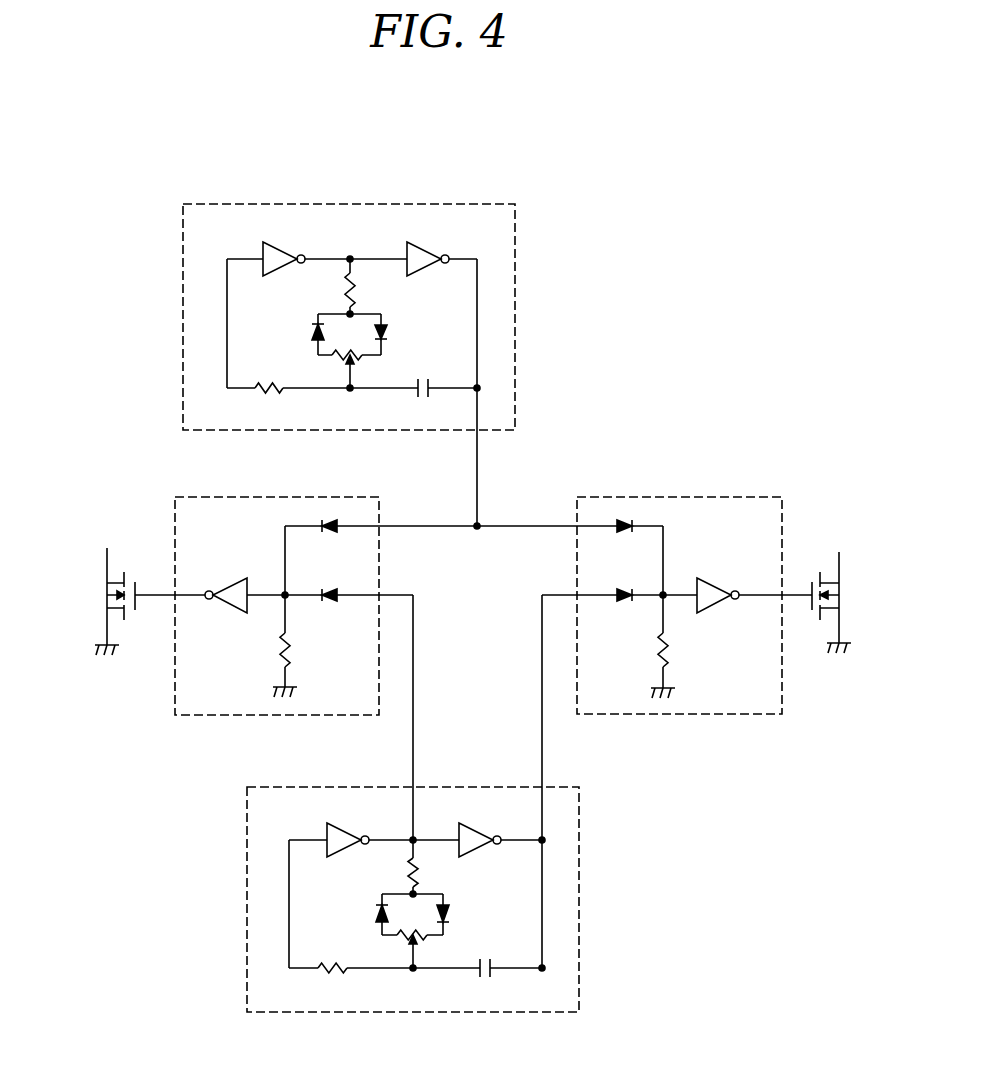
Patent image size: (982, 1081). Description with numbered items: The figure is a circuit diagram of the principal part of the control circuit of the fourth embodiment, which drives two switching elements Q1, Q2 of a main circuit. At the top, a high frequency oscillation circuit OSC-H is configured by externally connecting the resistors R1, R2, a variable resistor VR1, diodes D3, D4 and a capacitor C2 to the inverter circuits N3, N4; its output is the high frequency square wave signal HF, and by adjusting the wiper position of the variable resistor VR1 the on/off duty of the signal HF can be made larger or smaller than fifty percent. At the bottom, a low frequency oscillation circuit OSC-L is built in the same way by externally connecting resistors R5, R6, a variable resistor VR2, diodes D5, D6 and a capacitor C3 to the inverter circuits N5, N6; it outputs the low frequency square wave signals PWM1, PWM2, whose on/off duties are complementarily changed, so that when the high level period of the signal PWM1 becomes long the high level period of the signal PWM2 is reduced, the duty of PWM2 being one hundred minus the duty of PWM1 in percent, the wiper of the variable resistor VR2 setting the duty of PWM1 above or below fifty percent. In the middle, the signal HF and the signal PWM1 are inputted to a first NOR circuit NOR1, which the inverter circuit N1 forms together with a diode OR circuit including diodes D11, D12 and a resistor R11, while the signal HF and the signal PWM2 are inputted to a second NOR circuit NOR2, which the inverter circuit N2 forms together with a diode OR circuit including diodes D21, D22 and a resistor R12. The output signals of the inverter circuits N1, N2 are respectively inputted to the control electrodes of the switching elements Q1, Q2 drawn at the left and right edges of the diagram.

The high frequency oscillation circuit OSC-H is at (349, 303).
The low frequency oscillation circuit OSC-L is at (413, 917).
The first NOR circuit NOR1 is at (277, 590).
The second NOR circuit NOR2 is at (679, 590).
The high frequency square wave signal HF is at (477, 511).
The low frequency square wave signal PWM1 is at (377, 717).
The low frequency square wave signal PWM2 is at (582, 717).
The inverter circuit N1 is at (226, 583).
The inverter circuit N2 is at (718, 584).
The inverter circuit N3 is at (284, 249).
The inverter circuit N4 is at (428, 249).
The inverter circuit N5 is at (348, 830).
The inverter circuit N6 is at (480, 830).
The resistor R1 is at (271, 403).
The resistor R2 is at (332, 290).
The resistor R5 is at (396, 871).
The resistor R6 is at (335, 982).
The resistor R11 is at (263, 650).
The resistor R12 is at (688, 650).
The variable resistor VR1 is at (333, 367).
The variable resistor VR2 is at (396, 947).
The diode D3 is at (300, 333).
The diode D4 is at (398, 333).
The diode D5 is at (364, 913).
The diode D6 is at (461, 913).
The diode D11 is at (331, 541).
The diode D12 is at (335, 613).
The diode D21 is at (627, 541).
The diode D22 is at (625, 611).
The capacitor C2 is at (428, 401).
The capacitor C3 is at (492, 980).
The switching element Q1 is at (104, 601).
The switching element Q2 is at (843, 602).